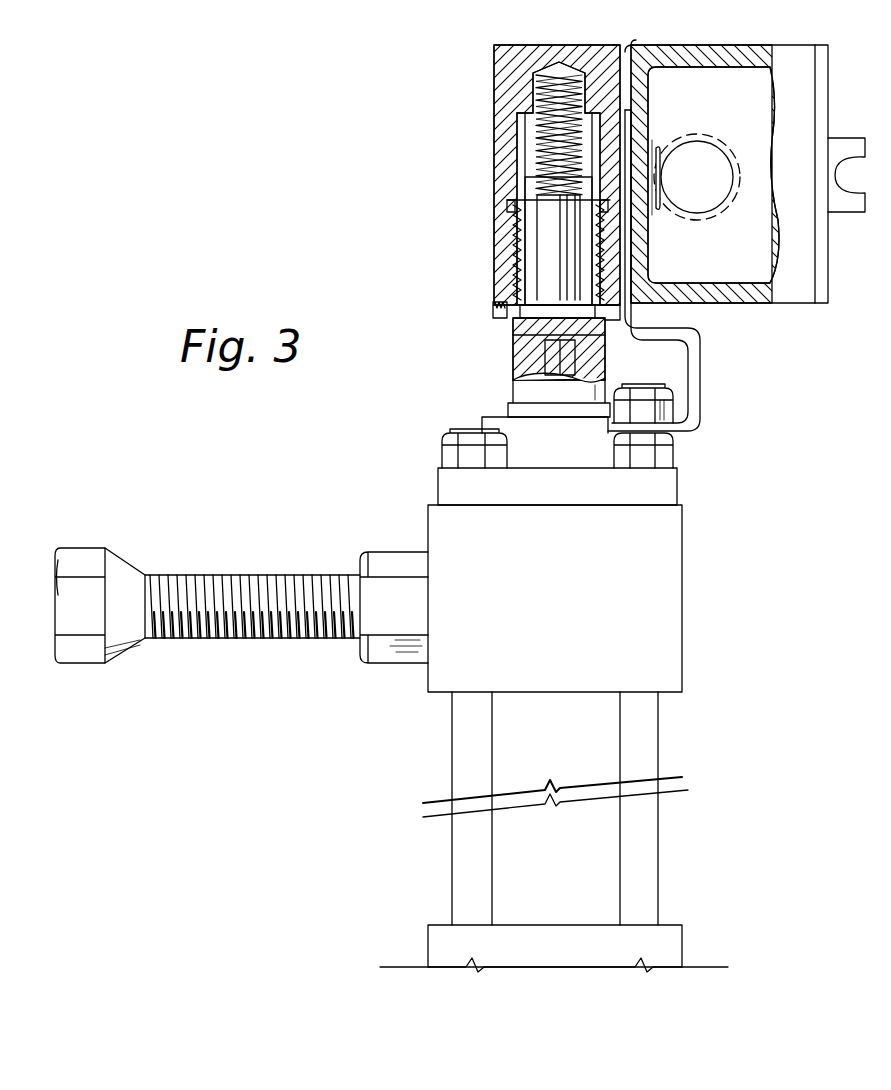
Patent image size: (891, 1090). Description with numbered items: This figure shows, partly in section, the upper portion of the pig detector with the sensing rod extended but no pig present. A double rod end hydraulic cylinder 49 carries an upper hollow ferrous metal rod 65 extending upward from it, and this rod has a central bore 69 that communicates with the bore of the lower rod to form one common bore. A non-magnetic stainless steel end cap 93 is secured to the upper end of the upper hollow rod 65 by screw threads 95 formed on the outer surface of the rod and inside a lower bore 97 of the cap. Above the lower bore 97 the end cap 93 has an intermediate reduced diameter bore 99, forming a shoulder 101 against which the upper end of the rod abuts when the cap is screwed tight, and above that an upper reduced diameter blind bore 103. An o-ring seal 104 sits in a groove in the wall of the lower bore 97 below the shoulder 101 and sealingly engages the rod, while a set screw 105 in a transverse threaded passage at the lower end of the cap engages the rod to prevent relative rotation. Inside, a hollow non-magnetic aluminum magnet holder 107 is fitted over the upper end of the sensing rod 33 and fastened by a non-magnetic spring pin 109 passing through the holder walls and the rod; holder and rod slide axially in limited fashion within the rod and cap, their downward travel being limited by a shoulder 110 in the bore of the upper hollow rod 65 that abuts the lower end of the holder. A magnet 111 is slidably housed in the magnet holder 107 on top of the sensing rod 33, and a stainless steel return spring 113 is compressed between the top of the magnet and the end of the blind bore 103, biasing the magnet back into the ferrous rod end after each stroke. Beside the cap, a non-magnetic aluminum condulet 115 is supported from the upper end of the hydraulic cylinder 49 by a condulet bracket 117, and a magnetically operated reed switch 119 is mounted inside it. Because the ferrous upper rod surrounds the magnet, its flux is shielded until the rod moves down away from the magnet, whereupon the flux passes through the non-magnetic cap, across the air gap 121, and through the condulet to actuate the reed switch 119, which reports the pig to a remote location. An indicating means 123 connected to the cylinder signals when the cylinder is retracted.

The non-magnetic end cap 93 is at (495, 46).
The upper reduced diameter blind bore 103 is at (535, 92).
The return spring 113 is at (518, 116).
The intermediate reduced diameter bore 99 is at (524, 134).
The magnet holder 107 is at (527, 182).
The shoulder 101 is at (522, 198).
The o-ring seal 104 is at (508, 208).
The screw threads 95 is at (510, 228).
The magnet 111 is at (503, 250).
The lower bore 97 is at (512, 270).
The set screw 105 is at (493, 306).
The spring pin 109 is at (522, 324).
The shoulder 110 is at (515, 338).
The central bore 69 is at (512, 358).
The upper hollow rod 65 is at (512, 392).
The sensing rod 33 is at (600, 368).
The condulet 115 is at (752, 303).
The reed switch 119 is at (666, 135).
The air gap 121 is at (630, 46).
The condulet bracket 117 is at (700, 393).
The double rod end hydraulic cylinder 49 is at (688, 615).
The indicating means 123 is at (82, 548).